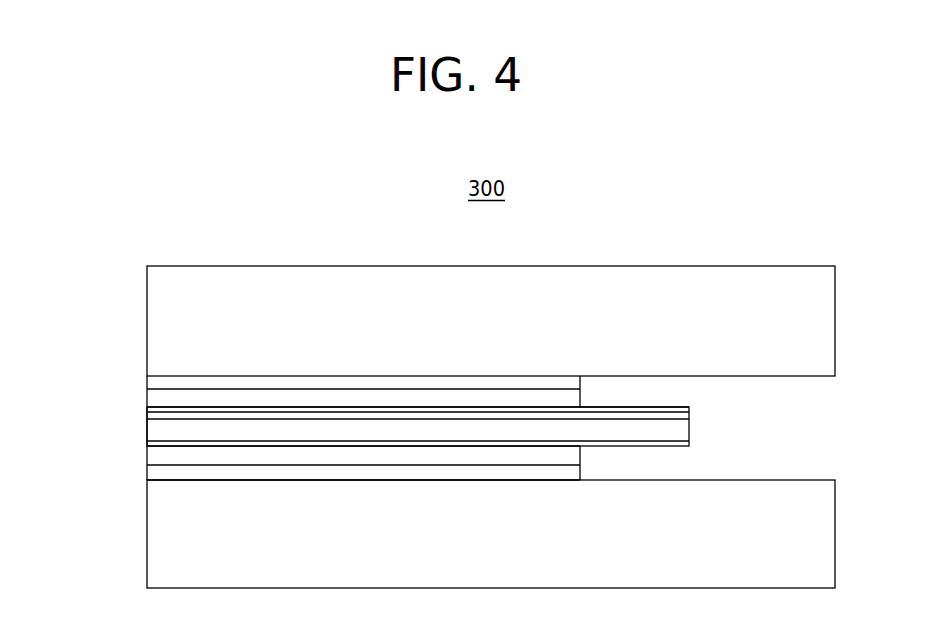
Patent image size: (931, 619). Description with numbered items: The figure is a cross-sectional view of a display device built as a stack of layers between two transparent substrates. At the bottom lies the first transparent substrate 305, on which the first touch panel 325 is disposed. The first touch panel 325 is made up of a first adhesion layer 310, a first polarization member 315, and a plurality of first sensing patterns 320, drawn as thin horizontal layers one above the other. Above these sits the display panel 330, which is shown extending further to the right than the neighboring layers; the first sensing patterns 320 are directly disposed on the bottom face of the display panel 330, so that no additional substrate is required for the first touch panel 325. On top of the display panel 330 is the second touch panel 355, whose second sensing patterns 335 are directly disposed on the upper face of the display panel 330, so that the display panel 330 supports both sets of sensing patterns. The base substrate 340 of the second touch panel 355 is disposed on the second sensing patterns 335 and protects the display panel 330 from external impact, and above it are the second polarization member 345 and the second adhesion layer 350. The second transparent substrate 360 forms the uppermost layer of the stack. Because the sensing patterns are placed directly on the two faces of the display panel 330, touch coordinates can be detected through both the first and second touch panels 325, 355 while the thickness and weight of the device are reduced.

The first transparent substrate 305 is at (152, 559).
The first adhesion layer 310 is at (152, 472).
The first polarization member 315 is at (152, 462).
The first sensing patterns 320 is at (152, 455).
The first touch panel 325 is at (70, 463).
The display panel 330 is at (152, 442).
The second sensing patterns 335 is at (152, 420).
The base substrate 340 is at (152, 408).
The second polarization member 345 is at (152, 390).
The second adhesion layer 350 is at (152, 376).
The second touch panel 355 is at (70, 348).
The second transparent substrate 360 is at (150, 316).